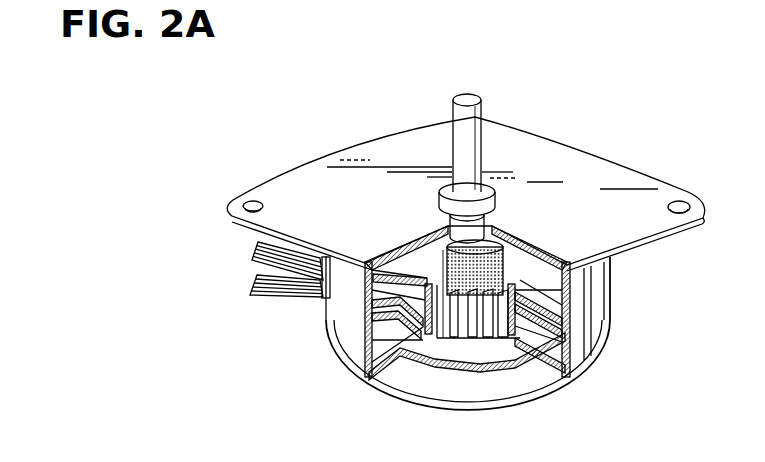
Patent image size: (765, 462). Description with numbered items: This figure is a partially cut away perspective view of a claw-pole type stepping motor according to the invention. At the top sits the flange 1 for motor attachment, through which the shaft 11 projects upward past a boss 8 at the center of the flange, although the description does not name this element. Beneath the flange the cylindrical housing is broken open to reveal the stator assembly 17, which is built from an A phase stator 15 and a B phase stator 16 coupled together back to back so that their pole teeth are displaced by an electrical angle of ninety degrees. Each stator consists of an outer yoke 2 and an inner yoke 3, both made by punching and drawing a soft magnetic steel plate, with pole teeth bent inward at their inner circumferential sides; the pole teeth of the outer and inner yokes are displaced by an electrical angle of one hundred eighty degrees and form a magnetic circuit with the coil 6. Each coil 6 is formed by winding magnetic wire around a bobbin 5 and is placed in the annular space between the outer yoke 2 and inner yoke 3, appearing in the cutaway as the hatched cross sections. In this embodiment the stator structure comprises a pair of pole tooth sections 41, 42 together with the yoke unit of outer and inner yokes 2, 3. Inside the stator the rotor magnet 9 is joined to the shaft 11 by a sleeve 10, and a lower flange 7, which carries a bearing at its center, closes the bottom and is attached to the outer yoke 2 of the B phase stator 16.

The flange 1 is at (342, 173).
The outer yoke 2 is at (413, 232).
The inner yoke 3 is at (437, 338).
The bobbin 5 is at (548, 358).
The coil 6 is at (572, 326).
The lower flange 7 is at (417, 385).
The bearing flange 8 is at (445, 186).
The rotor magnet 9 is at (477, 238).
The sleeve 10 is at (493, 242).
The shaft 11 is at (483, 112).
The A phase stator 15 is at (343, 303).
The B phase stator 16 is at (340, 344).
The stator assembly 17 is at (257, 324).
The pole tooth section 41 is at (457, 337).
The pole tooth section 42 is at (500, 338).